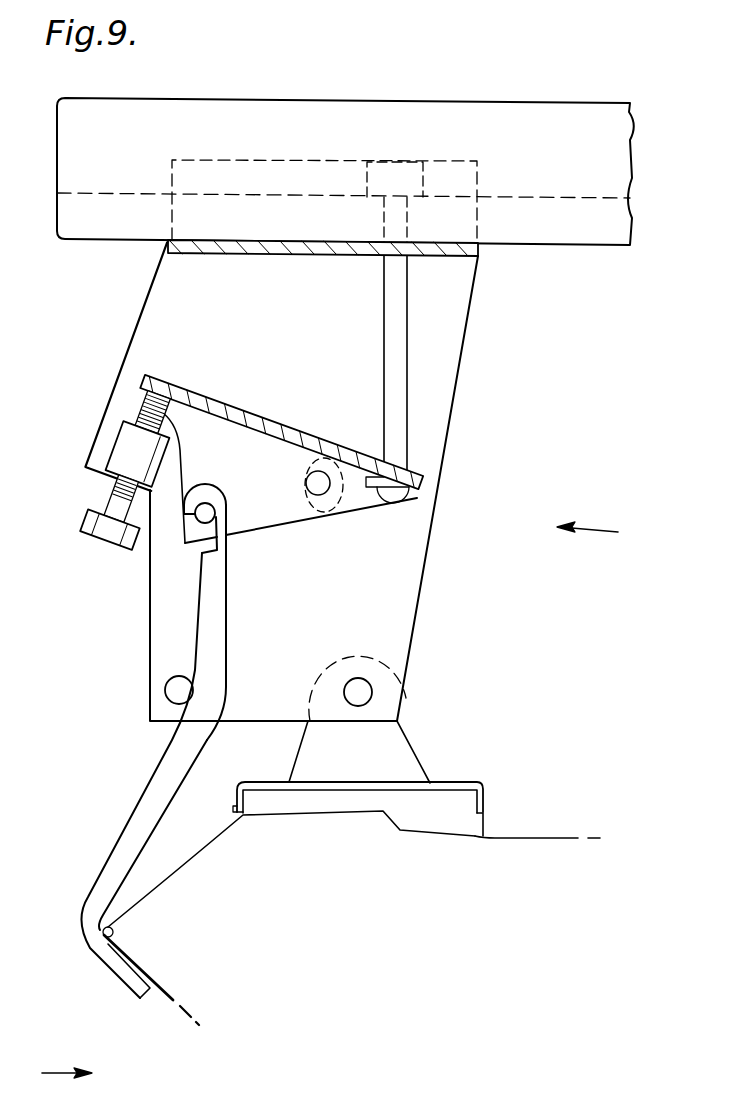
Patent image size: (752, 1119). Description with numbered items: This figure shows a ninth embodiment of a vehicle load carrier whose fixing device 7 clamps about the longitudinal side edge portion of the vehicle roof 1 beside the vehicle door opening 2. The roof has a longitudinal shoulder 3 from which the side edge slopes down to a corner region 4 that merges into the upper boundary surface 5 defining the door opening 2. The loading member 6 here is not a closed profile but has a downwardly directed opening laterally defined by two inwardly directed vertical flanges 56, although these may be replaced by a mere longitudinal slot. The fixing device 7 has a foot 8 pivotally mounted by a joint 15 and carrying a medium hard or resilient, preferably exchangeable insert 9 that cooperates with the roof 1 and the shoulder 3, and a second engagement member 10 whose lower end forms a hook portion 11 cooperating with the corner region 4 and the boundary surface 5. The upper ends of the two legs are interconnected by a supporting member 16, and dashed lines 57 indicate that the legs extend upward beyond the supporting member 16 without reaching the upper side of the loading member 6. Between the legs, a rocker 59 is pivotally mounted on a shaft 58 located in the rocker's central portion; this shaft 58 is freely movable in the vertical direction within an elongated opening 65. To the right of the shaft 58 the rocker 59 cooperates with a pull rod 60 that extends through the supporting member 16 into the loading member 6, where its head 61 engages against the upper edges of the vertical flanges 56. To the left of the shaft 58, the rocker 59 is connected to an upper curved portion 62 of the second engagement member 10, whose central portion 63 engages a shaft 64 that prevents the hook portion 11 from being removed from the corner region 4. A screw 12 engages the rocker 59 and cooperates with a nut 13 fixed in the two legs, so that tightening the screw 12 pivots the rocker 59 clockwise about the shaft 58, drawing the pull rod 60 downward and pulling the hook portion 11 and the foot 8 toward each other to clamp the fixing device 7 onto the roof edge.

The vehicle roof 1 is at (540, 840).
The vehicle door opening 2 is at (55, 1077).
The longitudinal shoulder 3 is at (395, 828).
The corner region 4 is at (106, 936).
The upper boundary surface 5 is at (163, 997).
The loading member 6 is at (512, 107).
The fixing device 7 is at (598, 536).
The foot 8 is at (443, 785).
The insert 9 is at (480, 830).
The second engagement member 10 is at (147, 783).
The hook portion 11 is at (127, 980).
The screw 12 is at (113, 533).
The nut 13 is at (122, 440).
The joint 15 is at (370, 692).
The supporting member 16 is at (455, 257).
The vertical flanges 56 is at (557, 228).
The dashed lines 57 is at (222, 160).
The shaft 58 is at (321, 476).
The rocker 59 is at (281, 427).
The pull rod 60 is at (404, 347).
The head 61 is at (383, 160).
The upper curved portion 62 is at (222, 497).
The central portion 63 is at (216, 680).
The shaft 64 is at (165, 689).
The elongated opening 65 is at (328, 512).